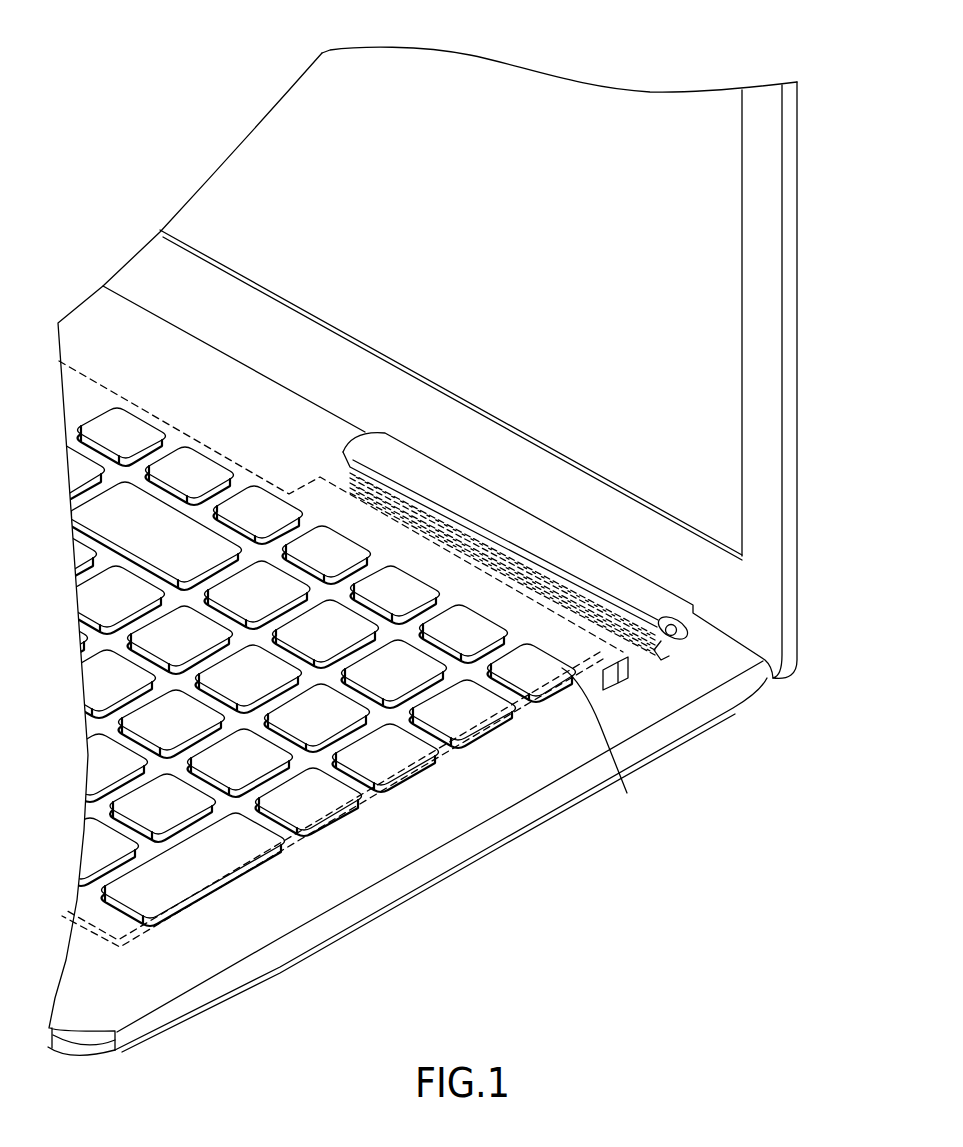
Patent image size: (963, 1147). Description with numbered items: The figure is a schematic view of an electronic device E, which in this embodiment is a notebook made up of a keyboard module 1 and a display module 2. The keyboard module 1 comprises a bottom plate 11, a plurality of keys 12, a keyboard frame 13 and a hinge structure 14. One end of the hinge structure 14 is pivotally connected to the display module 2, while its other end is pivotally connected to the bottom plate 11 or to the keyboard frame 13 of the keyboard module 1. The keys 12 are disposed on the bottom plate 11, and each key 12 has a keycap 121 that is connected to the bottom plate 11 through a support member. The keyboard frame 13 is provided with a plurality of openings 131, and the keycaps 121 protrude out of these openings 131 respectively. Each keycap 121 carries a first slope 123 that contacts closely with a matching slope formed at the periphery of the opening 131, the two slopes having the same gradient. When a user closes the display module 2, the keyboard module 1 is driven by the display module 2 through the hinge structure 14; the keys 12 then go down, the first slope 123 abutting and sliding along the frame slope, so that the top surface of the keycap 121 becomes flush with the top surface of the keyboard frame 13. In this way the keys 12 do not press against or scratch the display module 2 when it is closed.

The keyboard module 1 is at (744, 727).
The display module 2 is at (722, 303).
The bottom plate 11 is at (292, 845).
The key 12 is at (362, 667).
The keycap 121 is at (565, 663).
The first slope 123 is at (535, 677).
The keyboard frame 13 is at (424, 833).
The opening 131 is at (538, 677).
The hinge structure 14 is at (705, 628).
The electronic device E is at (206, 46).